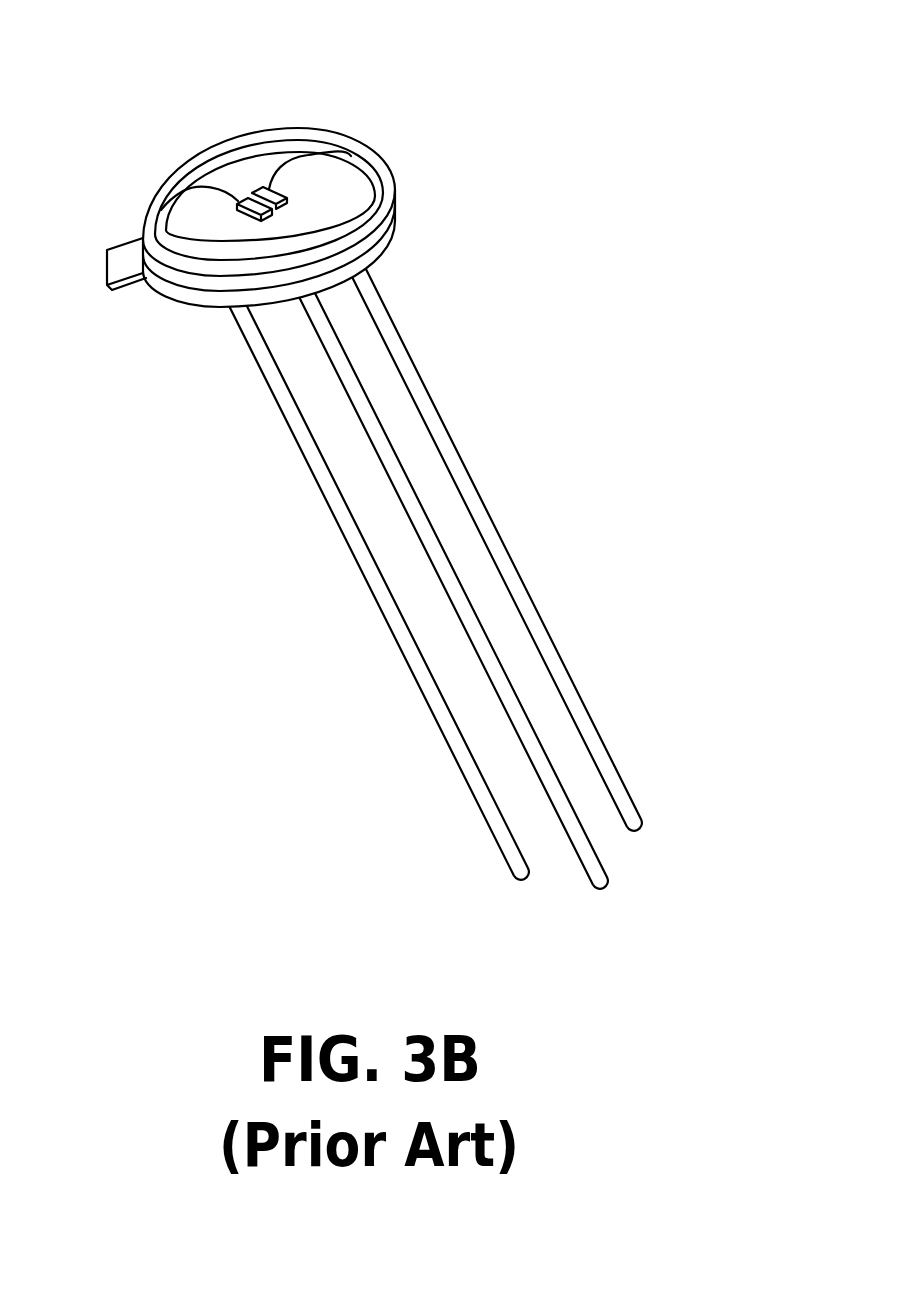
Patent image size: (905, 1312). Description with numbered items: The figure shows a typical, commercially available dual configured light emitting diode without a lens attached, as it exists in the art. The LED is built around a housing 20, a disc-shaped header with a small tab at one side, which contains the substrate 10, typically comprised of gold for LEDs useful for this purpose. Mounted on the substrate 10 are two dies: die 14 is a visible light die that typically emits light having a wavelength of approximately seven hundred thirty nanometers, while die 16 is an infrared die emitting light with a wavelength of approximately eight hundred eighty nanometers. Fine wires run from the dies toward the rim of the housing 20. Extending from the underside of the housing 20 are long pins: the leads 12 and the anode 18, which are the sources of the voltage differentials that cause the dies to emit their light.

The substrate 10 is at (236, 168).
The leads 12 is at (493, 842).
The visible light die 14 is at (343, 144).
The infrared die 16 is at (134, 212).
The anode 18 is at (601, 871).
The housing 20 is at (188, 300).